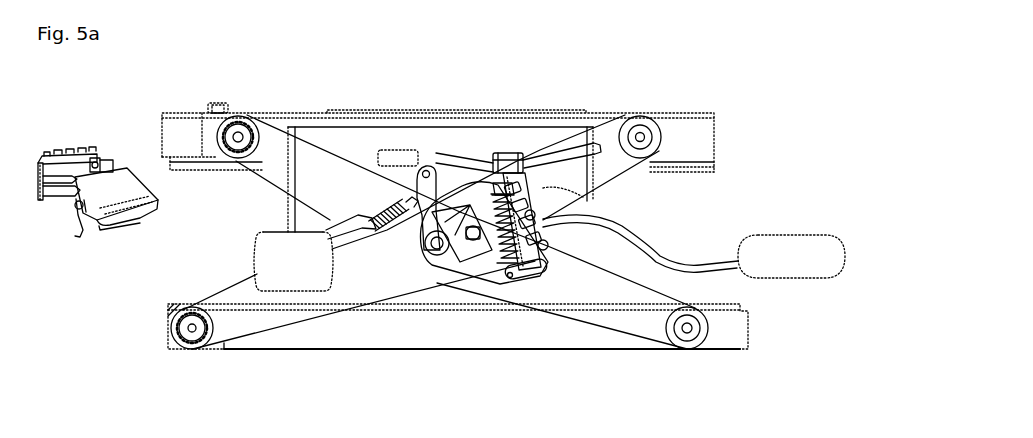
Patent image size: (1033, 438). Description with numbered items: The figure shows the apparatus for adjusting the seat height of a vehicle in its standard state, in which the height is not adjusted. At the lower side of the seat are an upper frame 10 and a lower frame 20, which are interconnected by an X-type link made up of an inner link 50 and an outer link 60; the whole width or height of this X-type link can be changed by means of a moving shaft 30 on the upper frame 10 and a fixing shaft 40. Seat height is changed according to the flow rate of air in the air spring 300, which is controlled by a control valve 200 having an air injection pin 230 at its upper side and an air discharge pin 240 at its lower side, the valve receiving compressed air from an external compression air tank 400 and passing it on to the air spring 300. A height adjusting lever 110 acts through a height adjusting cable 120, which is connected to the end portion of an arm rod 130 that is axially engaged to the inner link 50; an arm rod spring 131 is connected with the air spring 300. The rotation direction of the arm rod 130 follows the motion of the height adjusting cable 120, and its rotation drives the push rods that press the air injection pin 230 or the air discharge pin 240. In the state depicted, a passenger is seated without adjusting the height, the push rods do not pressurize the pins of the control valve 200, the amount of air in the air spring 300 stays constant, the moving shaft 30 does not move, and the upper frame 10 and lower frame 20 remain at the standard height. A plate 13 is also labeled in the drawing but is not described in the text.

The upper frame 10 is at (702, 134).
The mounting plate 13 is at (583, 197).
The lower frame 20 is at (723, 334).
The moving shaft 30 is at (640, 114).
The fixing shaft 40 is at (238, 114).
The inner link 50 is at (353, 287).
The outer link 60 is at (635, 313).
The height adjusting lever 110 is at (112, 203).
The height adjusting cable 120 is at (553, 150).
The arm rod 130 is at (427, 165).
The arm rod spring 131 is at (383, 203).
The control valve 200 is at (503, 275).
The air injection pin 230 is at (503, 183).
The air discharge pin 240 is at (537, 273).
The air spring 300 is at (300, 270).
The compression air tank 400 is at (790, 236).